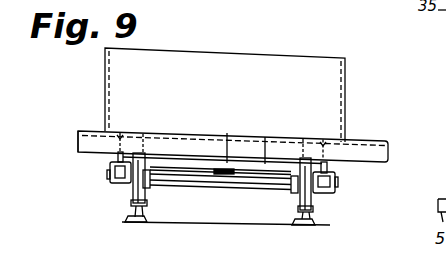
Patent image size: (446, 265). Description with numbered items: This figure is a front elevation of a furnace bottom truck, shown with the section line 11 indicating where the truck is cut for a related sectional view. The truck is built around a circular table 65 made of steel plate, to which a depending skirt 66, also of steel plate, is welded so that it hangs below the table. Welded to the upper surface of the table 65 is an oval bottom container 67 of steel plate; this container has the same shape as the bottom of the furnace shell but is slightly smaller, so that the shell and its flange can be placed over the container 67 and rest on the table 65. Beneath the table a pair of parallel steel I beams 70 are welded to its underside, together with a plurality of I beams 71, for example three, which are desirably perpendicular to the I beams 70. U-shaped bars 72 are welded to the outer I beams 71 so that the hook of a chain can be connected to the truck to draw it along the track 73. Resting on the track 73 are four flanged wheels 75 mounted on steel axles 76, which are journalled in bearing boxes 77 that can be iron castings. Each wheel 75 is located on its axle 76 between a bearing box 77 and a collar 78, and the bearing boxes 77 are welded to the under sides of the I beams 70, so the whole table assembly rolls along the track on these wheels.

The section line 11- 11 is at (55, 133).
The circular table 65 is at (180, 134).
The depending skirt 66 is at (78, 141).
The oval bottom container 67 is at (345, 82).
The I beams 70 is at (117, 158).
The I beams 71 is at (265, 137).
The U-shaped bars 72 is at (227, 133).
The track 73 is at (128, 211).
The flanged wheels 75 is at (143, 187).
The steel axles 76 is at (230, 186).
The bearing boxes 77 is at (118, 188).
The collars 78 is at (150, 178).